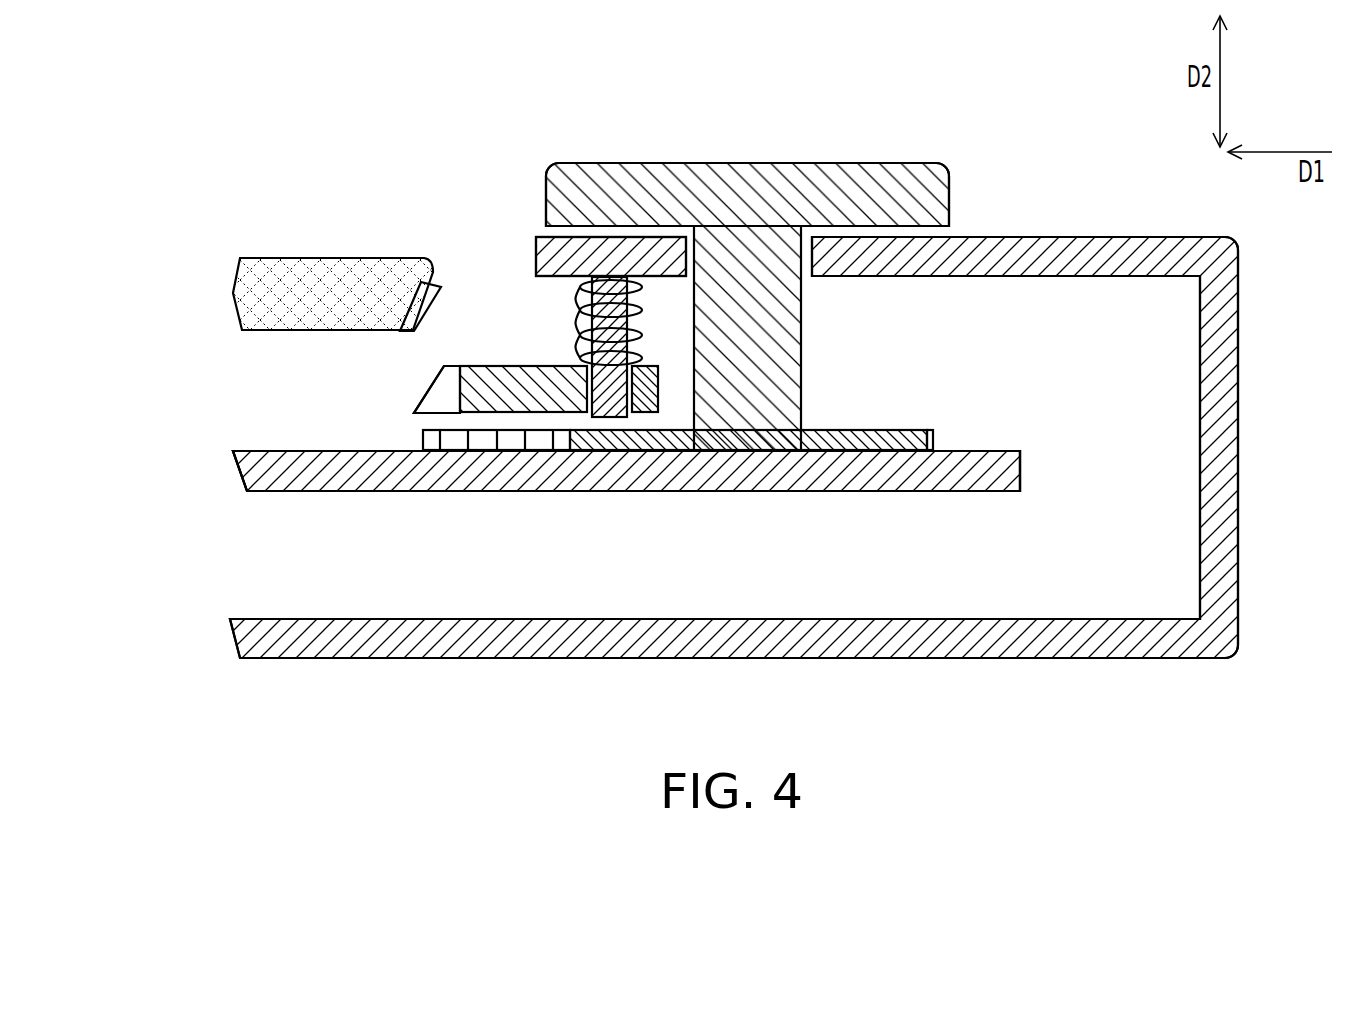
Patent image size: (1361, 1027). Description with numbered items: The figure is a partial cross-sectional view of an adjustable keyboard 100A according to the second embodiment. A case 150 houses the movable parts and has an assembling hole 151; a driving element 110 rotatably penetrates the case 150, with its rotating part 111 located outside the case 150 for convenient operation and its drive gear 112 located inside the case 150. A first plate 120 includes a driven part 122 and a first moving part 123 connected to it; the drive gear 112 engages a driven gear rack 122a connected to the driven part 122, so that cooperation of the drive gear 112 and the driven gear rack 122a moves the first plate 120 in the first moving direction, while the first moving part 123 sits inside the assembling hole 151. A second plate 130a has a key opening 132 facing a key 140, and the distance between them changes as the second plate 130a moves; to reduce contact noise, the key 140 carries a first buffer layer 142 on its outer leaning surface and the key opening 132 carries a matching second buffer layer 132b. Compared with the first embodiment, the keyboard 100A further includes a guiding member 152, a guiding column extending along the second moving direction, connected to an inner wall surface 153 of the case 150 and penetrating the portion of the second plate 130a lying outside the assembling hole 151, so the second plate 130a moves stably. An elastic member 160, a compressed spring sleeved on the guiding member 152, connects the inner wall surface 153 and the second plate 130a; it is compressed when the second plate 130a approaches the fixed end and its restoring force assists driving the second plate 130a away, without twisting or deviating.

The adjustable keyboard 100A is at (1343, 712).
The driving element 110 is at (783, 343).
The rotating part 111 is at (892, 197).
The drive gear 112 is at (652, 440).
The first plate 120 is at (626, 471).
The driven part 122 is at (778, 470).
The driven gear rack 122a is at (513, 442).
The first moving part 123 is at (352, 470).
The second plate 130a is at (484, 374).
The key opening 132 is at (405, 380).
The second buffer layer 132b is at (428, 398).
The key 140 is at (330, 277).
The first buffer layer 142 is at (415, 297).
The case 150 is at (1005, 638).
The assembling hole 151 is at (513, 262).
The guiding member 152 is at (613, 390).
The inner wall surface 153 is at (658, 274).
The elastic member 160 is at (643, 310).